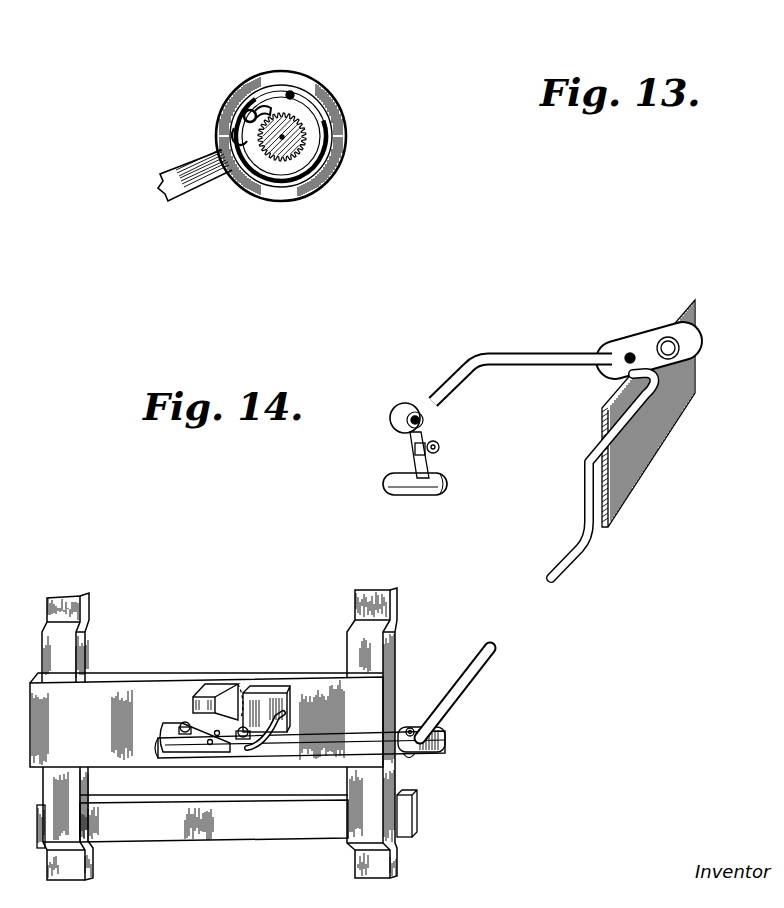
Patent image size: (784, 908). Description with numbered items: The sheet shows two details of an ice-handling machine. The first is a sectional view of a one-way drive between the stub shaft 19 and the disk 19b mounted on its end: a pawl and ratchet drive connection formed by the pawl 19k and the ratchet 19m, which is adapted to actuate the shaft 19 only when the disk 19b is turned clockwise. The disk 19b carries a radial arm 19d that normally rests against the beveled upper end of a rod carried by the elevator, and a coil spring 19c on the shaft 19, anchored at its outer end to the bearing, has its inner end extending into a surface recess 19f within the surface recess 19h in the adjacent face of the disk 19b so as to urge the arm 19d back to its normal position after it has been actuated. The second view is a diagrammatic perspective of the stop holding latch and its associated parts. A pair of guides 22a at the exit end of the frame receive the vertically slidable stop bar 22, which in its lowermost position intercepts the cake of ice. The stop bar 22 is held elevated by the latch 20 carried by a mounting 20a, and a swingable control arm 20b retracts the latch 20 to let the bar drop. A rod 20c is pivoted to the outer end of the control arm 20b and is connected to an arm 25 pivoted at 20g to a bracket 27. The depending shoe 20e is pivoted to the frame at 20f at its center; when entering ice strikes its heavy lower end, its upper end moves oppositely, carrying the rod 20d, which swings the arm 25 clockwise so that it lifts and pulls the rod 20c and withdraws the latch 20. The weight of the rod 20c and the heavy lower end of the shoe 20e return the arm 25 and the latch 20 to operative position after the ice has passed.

In FIG. 13, the stub shaft 19 is at (317, 183).
In FIG. 13, the disk 19b is at (327, 163).
In FIG. 13, the coil spring 19c is at (308, 100).
In FIG. 13, the radial arm 19d is at (183, 173).
In FIG. 13, the surface recess 19f is at (232, 125).
In FIG. 13, the surface recess 19h is at (268, 185).
In FIG. 13, the pawl 19k is at (247, 92).
In FIG. 13, the ratchet 19m is at (307, 132).
In FIG. 14, the latch 20 is at (198, 705).
In FIG. 14, the mounting 20a is at (252, 720).
In FIG. 14, the control arm 20b is at (347, 747).
In FIG. 14, the rod 20c is at (623, 417).
In FIG. 14, the rod 20d is at (487, 355).
In FIG. 14, the shoe 20e is at (430, 480).
In FIG. 14, the pivot 20f is at (440, 445).
In FIG. 14, the pivot 20g is at (673, 343).
In FIG. 14, the stop bar 22 is at (260, 812).
In FIG. 14, the guides 22a is at (63, 630).
In FIG. 14, the arm 25 is at (668, 365).
In FIG. 14, the bracket 27 is at (683, 303).